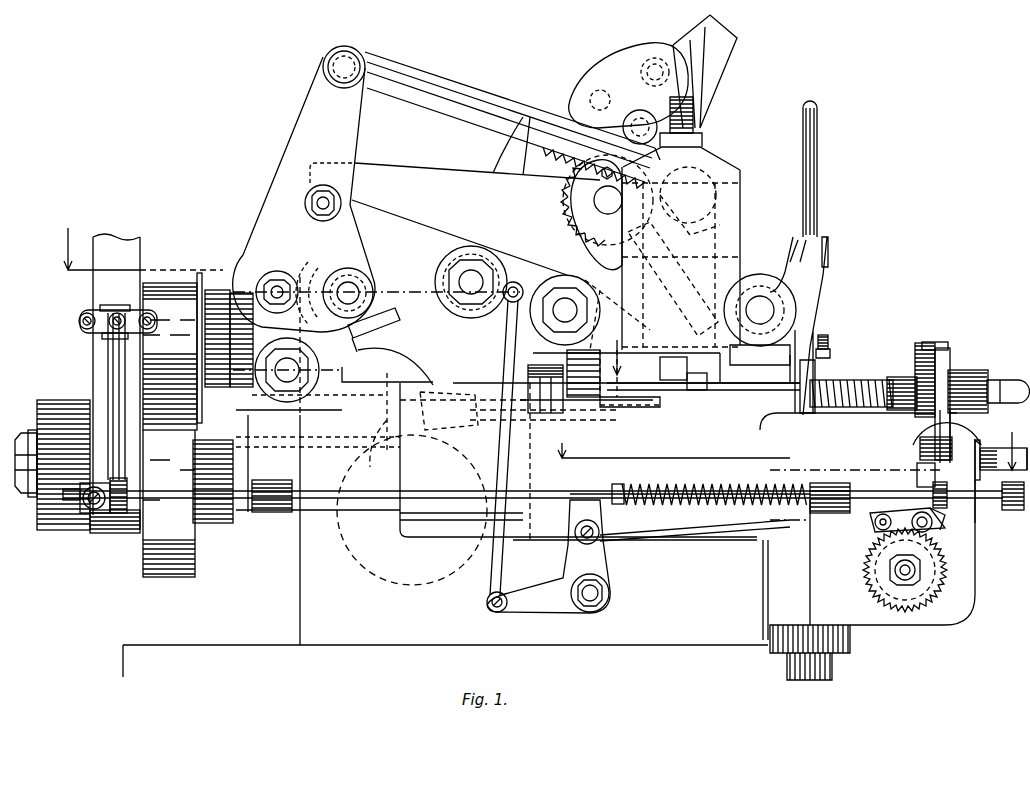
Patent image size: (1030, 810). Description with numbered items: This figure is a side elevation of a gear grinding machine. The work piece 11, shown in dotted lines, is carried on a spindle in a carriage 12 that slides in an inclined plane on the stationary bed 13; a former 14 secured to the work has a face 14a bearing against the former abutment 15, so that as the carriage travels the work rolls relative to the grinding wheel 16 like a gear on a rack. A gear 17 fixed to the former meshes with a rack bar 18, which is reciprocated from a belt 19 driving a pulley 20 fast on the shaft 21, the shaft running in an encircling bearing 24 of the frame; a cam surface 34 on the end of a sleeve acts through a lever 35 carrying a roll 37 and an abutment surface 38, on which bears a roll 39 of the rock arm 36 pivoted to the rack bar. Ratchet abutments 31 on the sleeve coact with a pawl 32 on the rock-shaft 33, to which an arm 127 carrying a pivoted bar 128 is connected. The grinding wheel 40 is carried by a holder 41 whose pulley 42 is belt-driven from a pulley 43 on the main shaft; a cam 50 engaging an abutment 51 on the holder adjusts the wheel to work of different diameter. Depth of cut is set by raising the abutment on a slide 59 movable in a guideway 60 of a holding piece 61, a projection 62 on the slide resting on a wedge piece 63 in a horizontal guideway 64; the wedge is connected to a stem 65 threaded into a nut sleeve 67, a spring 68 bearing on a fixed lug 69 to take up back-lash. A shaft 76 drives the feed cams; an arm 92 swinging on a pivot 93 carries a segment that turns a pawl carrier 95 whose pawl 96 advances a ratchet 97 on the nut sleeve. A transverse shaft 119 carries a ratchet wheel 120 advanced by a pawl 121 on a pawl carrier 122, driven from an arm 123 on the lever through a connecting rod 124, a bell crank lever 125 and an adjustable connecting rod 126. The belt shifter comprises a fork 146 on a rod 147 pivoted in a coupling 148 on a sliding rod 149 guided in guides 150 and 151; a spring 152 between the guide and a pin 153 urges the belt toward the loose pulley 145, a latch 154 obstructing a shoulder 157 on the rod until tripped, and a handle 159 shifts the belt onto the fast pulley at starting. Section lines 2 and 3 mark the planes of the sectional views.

The section line 2 is at (788, 441).
The section line 3 is at (342, 292).
The work piece 11 is at (557, 208).
The carriage 12 is at (437, 178).
The bed 13 is at (383, 220).
The former 14 is at (595, 241).
The face of the former 14a is at (650, 247).
The former abutment 15 is at (668, 272).
The grinding wheel 16 is at (640, 327).
The gear 17 is at (572, 188).
The rack bar 18 is at (487, 106).
The belt 19 is at (105, 283).
The pulley 20 is at (92, 532).
The shaft 21 is at (220, 478).
The bearing 24 is at (667, 510).
The ratchet abutments 31 is at (735, 350).
The pawl 32 is at (548, 413).
The rock-shaft 33 is at (653, 398).
The cam surface 34 is at (480, 453).
The lever 35 is at (420, 347).
The rock arm 36 is at (303, 137).
The roll 37 is at (443, 410).
The abutment surface 38 is at (392, 308).
The roll 39 is at (365, 277).
The grinding wheel 40 is at (604, 420).
The carrier 41 is at (230, 400).
The driving pulley 42 is at (165, 290).
The pulley 43 is at (173, 563).
The cam 50 is at (346, 540).
The abutment 51 is at (363, 451).
The slide 59 is at (738, 243).
The guideway 60 is at (737, 190).
The holding piece 61 is at (727, 230).
The projection 62 is at (692, 392).
The wedge piece 63 is at (676, 382).
The horizontal guideway 64 is at (740, 403).
The stem 65 is at (850, 380).
The nut sleeve 67 is at (987, 387).
The spring 68 is at (889, 377).
The fixed lug 69 is at (910, 358).
The shaft 76 is at (988, 458).
The arm 92 is at (950, 426).
The pivot 93 is at (928, 446).
The pawl carrier and sleeve 95 is at (945, 375).
The pawl 96 is at (935, 346).
The ratchet 97 is at (923, 415).
The transverse shaft 119 is at (903, 571).
The ratchet wheel 120 is at (876, 598).
The pawl 121 is at (937, 530).
The pawl carrier 122 is at (893, 513).
The arm 123 is at (508, 302).
The connecting rod 124 is at (503, 556).
The bell crank lever 125 is at (555, 603).
The connecting rod 126 is at (717, 528).
The arm 127 is at (826, 337).
The bar 128 is at (810, 383).
The loose pulley 145 is at (50, 523).
The fork 146 is at (80, 323).
The rod 147 is at (110, 356).
The coupling 148 is at (118, 505).
The sliding rod 149 is at (160, 493).
The guide 150 is at (275, 513).
The guide 151 is at (832, 483).
The spring 152 is at (707, 494).
The pin 153 is at (618, 490).
The latch 154 is at (930, 478).
The shoulder 157 is at (940, 510).
The handle 159 is at (1016, 512).